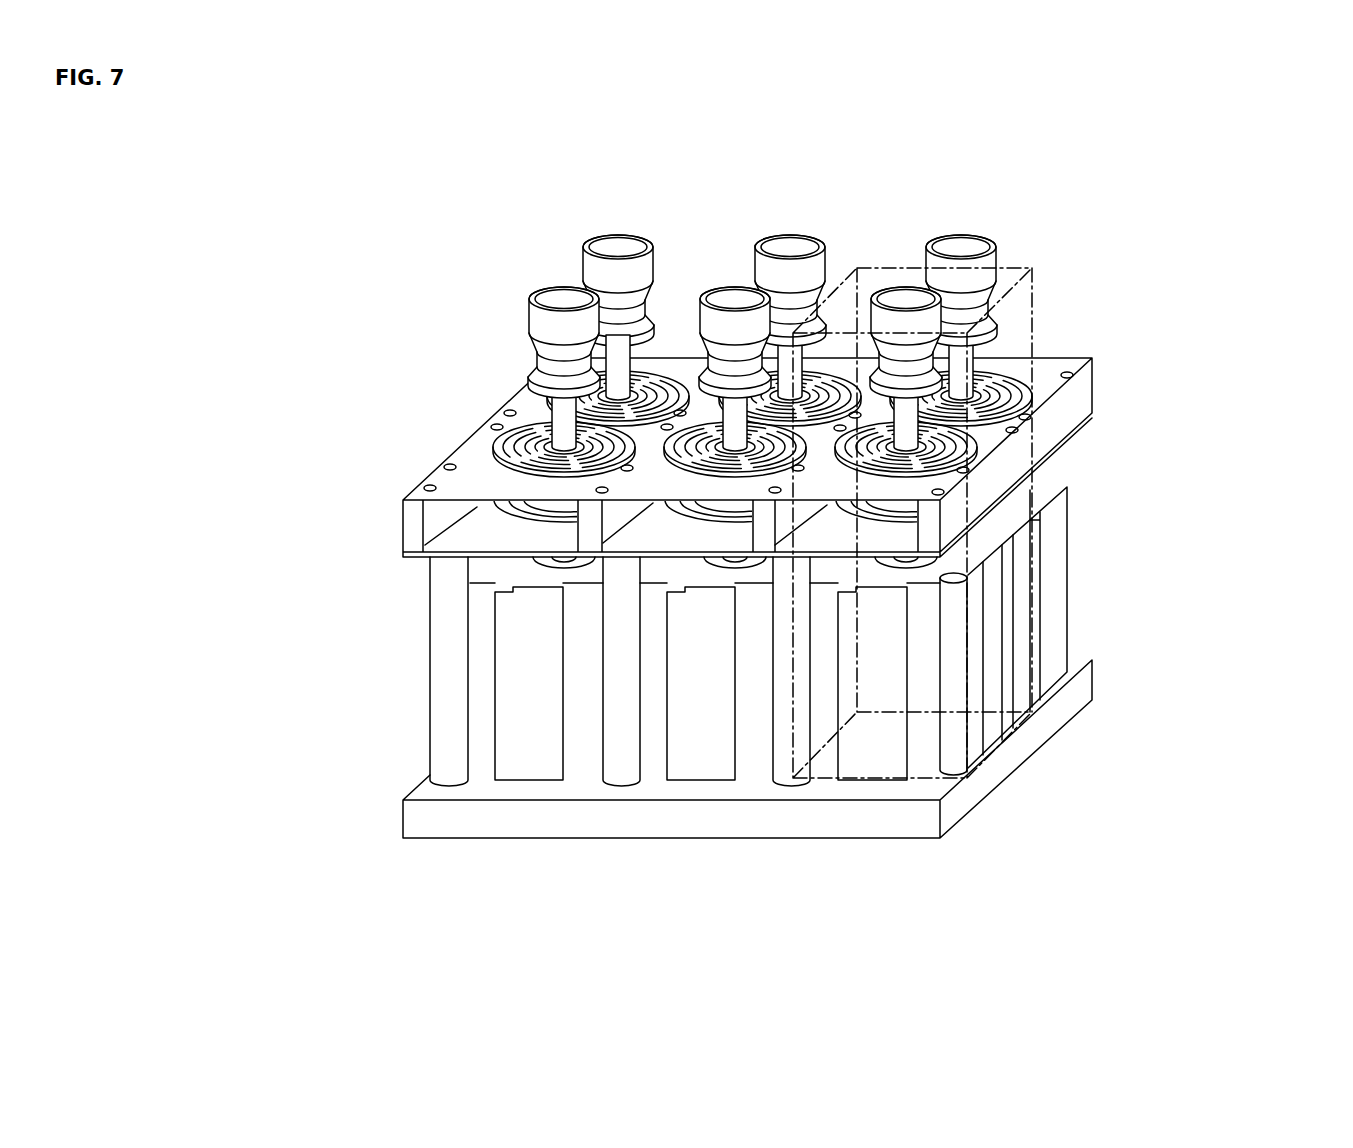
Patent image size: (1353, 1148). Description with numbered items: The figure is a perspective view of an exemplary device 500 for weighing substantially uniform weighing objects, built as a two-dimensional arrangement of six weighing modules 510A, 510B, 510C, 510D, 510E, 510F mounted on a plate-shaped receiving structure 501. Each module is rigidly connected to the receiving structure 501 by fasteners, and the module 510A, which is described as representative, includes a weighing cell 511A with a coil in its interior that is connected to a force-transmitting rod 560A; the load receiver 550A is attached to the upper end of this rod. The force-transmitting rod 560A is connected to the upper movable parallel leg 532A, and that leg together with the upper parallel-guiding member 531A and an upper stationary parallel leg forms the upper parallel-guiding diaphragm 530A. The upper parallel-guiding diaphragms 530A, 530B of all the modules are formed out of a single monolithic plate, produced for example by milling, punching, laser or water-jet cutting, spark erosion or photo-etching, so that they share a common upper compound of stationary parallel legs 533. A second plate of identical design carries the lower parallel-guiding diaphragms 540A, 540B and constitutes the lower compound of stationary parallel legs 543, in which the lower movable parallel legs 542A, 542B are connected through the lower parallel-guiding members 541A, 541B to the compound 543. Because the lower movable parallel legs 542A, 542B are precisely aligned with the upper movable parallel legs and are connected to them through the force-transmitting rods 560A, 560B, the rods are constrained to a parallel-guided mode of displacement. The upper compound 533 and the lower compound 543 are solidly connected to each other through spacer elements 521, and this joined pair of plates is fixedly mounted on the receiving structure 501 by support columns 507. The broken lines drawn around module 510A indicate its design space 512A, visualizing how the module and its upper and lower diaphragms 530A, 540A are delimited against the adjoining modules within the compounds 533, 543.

The device 500 is at (775, 545).
The receiving structure 501 is at (978, 790).
The support columns 507 is at (448, 630).
The weighing module 510A is at (875, 713).
The weighing module 510B is at (700, 713).
The weighing module 510C is at (518, 712).
The weighing module 510D is at (978, 225).
The weighing module 510E is at (752, 222).
The weighing module 510F is at (593, 222).
The weighing cell 511A is at (927, 688).
The design space 512A is at (1017, 307).
The spacer elements 521 is at (968, 522).
The upper parallel-guiding diaphragm 530A is at (867, 407).
The upper parallel-guiding diaphragm 530B is at (620, 352).
The upper parallel-guiding member 531A is at (952, 440).
The upper movable parallel leg 532A is at (910, 418).
The upper compound of stationary parallel legs 533 is at (943, 480).
The lower parallel-guiding diaphragm 540A is at (893, 548).
The lower parallel-guiding diaphragm 540B is at (733, 548).
The lower parallel-guiding member 541A is at (940, 575).
The lower parallel-guiding member 541B is at (730, 548).
The lower movable parallel leg 542A is at (915, 518).
The lower movable parallel leg 542B is at (723, 515).
The lower compound of stationary parallel legs 543 is at (487, 532).
The load receiver 550A is at (908, 333).
The force-transmitting rod 560A is at (976, 385).
The force-transmitting rod 560B is at (690, 417).